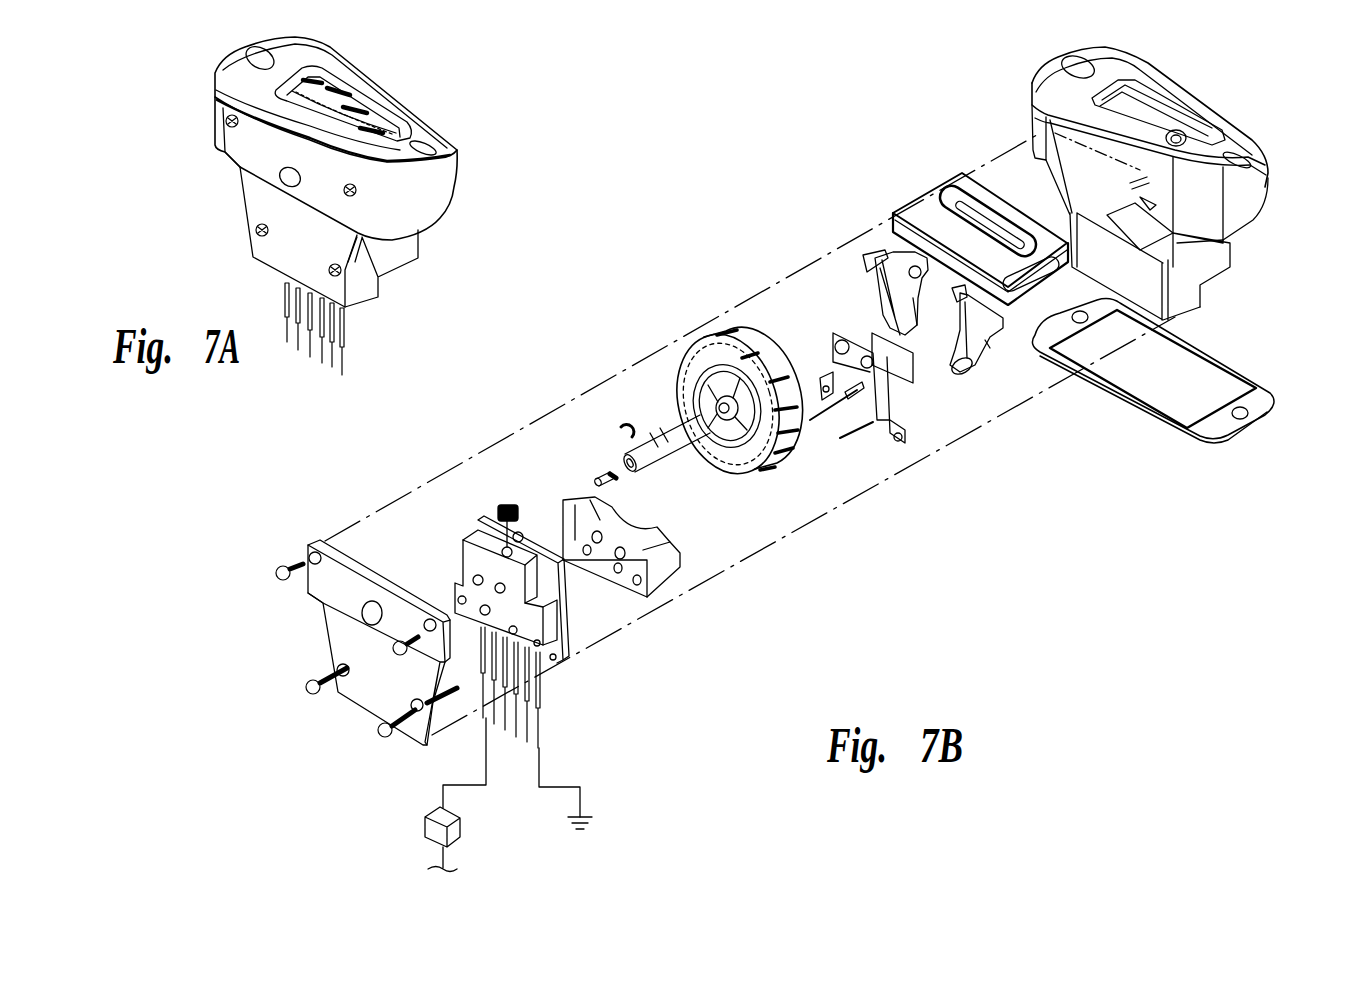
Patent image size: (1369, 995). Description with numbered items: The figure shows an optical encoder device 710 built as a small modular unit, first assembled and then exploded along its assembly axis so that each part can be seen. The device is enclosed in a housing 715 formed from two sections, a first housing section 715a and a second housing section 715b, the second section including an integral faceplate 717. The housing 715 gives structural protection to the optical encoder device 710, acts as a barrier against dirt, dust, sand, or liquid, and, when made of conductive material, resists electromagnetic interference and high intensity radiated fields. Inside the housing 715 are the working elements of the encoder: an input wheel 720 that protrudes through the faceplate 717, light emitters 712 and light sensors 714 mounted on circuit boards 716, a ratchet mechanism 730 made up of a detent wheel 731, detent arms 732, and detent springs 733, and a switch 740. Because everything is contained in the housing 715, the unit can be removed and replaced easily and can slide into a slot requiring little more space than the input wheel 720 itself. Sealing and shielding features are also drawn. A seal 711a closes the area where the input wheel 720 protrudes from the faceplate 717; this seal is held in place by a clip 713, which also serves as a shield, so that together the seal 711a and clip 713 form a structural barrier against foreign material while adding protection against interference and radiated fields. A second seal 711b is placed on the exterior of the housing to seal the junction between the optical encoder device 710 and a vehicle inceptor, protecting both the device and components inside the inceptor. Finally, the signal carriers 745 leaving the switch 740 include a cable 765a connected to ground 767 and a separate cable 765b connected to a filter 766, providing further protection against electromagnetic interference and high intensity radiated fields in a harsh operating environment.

In FIG. 7A, the optical encoder device 710 is at (403, 75).
In FIG. 7B, the optical encoder device 710 is at (994, 626).
In FIG. 7B, the seal 711a is at (950, 180).
In FIG. 7B, the seal 711b is at (1191, 443).
In FIG. 7B, the light emitters 712 is at (835, 355).
In FIG. 7B, the clip 713 is at (892, 232).
In FIG. 7B, the light sensors 714 is at (520, 537).
In FIG. 7A, the housing 715 is at (181, 182).
In FIG. 7B, the housing 715 is at (297, 711).
In FIG. 7B, the first housing section 715a is at (310, 624).
In FIG. 7B, the second housing section 715b is at (1264, 255).
In FIG. 7B, the circuit boards 716 is at (565, 607).
In FIG. 7B, the faceplate 717 is at (1115, 73).
In FIG. 7B, the input wheel 720 is at (727, 332).
In FIG. 7B, the ratchet mechanism 730 is at (931, 427).
In FIG. 7B, the detent wheel 731 is at (747, 330).
In FIG. 7B, the detent arms 732 is at (877, 257).
In FIG. 7B, the detent springs 733 is at (862, 268).
In FIG. 7B, the switch 740 is at (457, 547).
In FIG. 7B, the signal carriers 745 is at (556, 701).
In FIG. 7B, the cable 765a is at (580, 797).
In FIG. 7B, the cable 765b is at (485, 767).
In FIG. 7B, the filter 766 is at (430, 830).
In FIG. 7B, the ground 767 is at (588, 838).